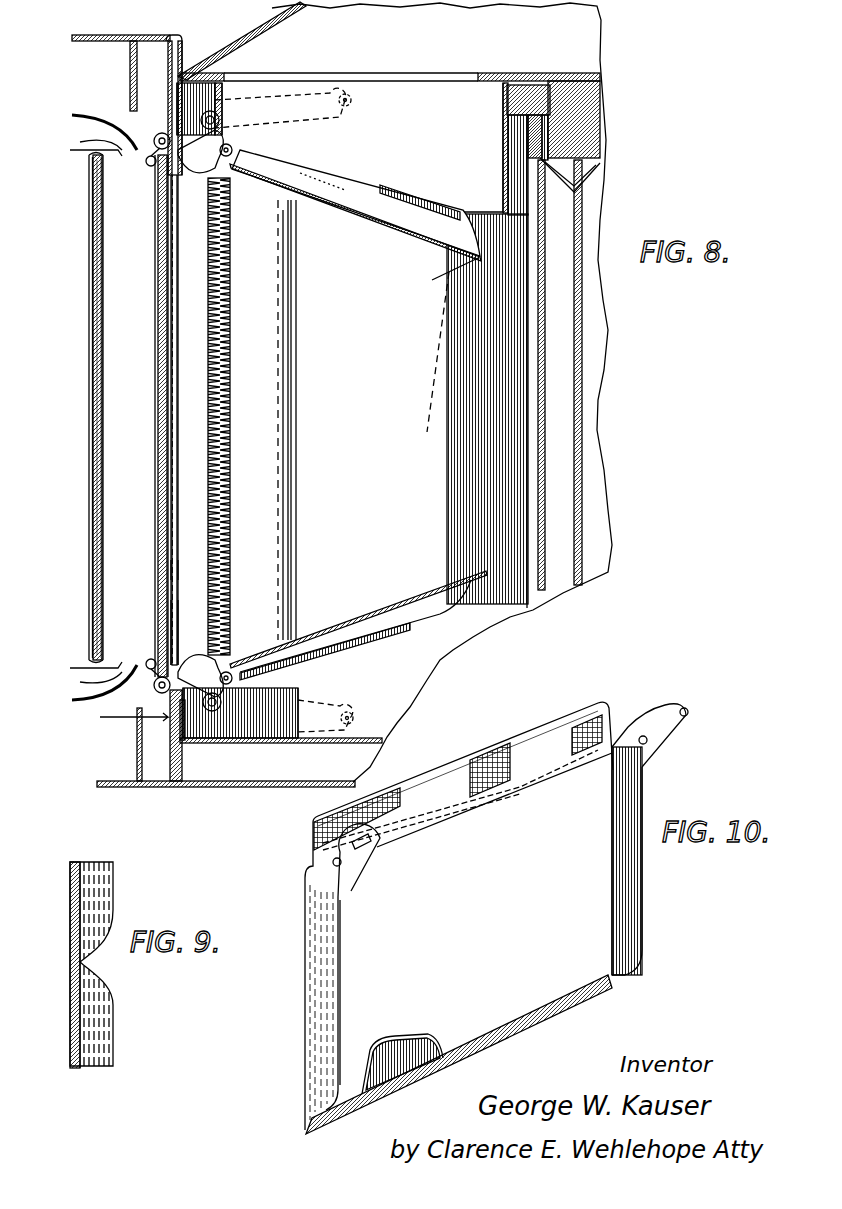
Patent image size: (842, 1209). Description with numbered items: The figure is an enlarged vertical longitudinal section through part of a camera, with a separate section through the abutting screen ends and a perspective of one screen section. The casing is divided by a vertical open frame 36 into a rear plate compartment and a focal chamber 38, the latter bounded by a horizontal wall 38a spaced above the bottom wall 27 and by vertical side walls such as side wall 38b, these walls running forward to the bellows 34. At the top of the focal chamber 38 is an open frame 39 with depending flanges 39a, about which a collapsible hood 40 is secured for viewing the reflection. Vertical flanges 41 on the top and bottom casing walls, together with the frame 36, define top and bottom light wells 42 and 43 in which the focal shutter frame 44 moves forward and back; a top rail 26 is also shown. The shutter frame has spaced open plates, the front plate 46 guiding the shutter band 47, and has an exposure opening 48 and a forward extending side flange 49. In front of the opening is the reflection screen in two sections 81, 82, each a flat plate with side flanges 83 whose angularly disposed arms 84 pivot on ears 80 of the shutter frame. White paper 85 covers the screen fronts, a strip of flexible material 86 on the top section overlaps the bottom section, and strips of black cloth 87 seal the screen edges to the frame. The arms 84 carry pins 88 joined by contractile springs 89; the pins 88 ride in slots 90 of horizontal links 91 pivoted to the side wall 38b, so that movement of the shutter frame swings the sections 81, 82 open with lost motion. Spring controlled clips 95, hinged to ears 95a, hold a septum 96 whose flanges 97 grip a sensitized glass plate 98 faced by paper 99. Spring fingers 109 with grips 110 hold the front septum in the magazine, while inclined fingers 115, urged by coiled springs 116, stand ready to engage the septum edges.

In FIG. 8, the top rail 26 is at (95, 30).
In FIG. 8, the bottom wall 27 is at (110, 787).
In FIG. 8, the bellows 34 is at (600, 178).
In FIG. 8, the open frame 36 is at (130, 63).
In FIG. 8, the focal chamber 38 is at (498, 607).
In FIG. 8, the horizontal wall 38a is at (340, 743).
In FIG. 8, the vertical side wall 38b is at (296, 500).
In FIG. 8, the open frame 39 is at (420, 185).
In FIG. 8, the depending flanges 39a is at (508, 150).
In FIG. 8, the collapsible hood 40 is at (255, 22).
In FIG. 8, the vertical flanges 41 is at (180, 50).
In FIG. 8, the top light well 42 is at (140, 88).
In FIG. 8, the bottom light well 43 is at (150, 775).
In FIG. 8, the focal shutter frame 44 is at (117, 724).
In FIG. 8, the front plate 46 is at (188, 755).
In FIG. 8, the shutter band 47 is at (172, 578).
In FIG. 8, the exposure opening 48 is at (178, 640).
In FIG. 8, the side flange 49 is at (290, 463).
In FIG. 8, the ears 80 is at (236, 148).
In FIG. 8, the top screen section 81 is at (357, 235).
In FIG. 9, the top screen section 81 is at (62, 889).
In FIG. 10, the top screen section 81 is at (297, 1007).
In FIG. 8, the bottom screen section 82 is at (348, 600).
In FIG. 9, the bottom screen section 82 is at (62, 1024).
In FIG. 8, the side flanges 83 is at (445, 205).
In FIG. 9, the side flanges 83 is at (113, 868).
In FIG. 10, the side flanges 83 is at (640, 892).
In FIG. 10, the arms 84 is at (355, 858).
In FIG. 8, the white paper 85 is at (360, 220).
In FIG. 9, the white paper 85 is at (80, 885).
In FIG. 10, the white paper 85 is at (425, 1070).
In FIG. 8, the strip of flexible material 86 is at (444, 277).
In FIG. 9, the strip of flexible material 86 is at (78, 962).
In FIG. 10, the strip of flexible material 86 is at (545, 1022).
In FIG. 8, the strips of black cloth 87 is at (230, 178).
In FIG. 10, the strips of black cloth 87 is at (468, 760).
In FIG. 8, the pins 88 is at (215, 125).
In FIG. 10, the pins 88 is at (372, 840).
In FIG. 8, the contractile springs 89 is at (230, 375).
In FIG. 8, the slots 90 is at (200, 118).
In FIG. 8, the horizontal links 91 is at (340, 110).
In FIG. 8, the spring controlled clips 95 is at (158, 150).
In FIG. 8, the ears 95a is at (146, 164).
In FIG. 8, the septum 96 is at (89, 230).
In FIG. 8, the flanges 97 is at (92, 180).
In FIG. 8, the sensitized glass plate 98 is at (158, 303).
In FIG. 8, the sheet of paper 99 is at (92, 292).
In FIG. 8, the spring fingers 109 is at (70, 150).
In FIG. 8, the grips 110 is at (80, 140).
In FIG. 8, the fingers 115 is at (170, 72).
In FIG. 8, the coiled springs 116 is at (225, 72).